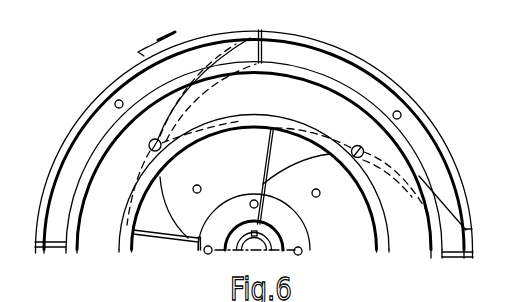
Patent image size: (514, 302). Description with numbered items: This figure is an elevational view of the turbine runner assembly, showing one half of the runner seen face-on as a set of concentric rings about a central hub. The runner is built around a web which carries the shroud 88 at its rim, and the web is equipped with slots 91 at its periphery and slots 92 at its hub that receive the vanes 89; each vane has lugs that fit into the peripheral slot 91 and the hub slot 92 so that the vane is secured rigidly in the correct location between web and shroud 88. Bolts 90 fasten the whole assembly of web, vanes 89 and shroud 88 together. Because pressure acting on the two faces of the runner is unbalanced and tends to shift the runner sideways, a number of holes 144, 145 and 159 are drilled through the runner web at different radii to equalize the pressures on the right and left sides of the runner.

The shroud 88 is at (246, 125).
The vane 89 is at (263, 50).
The bolt 90 is at (149, 147).
The slot at periphery 91 is at (264, 29).
The slot at hub 92 is at (197, 241).
The hole 144 is at (401, 115).
The hole 145 is at (331, 183).
The hole 159 is at (302, 250).